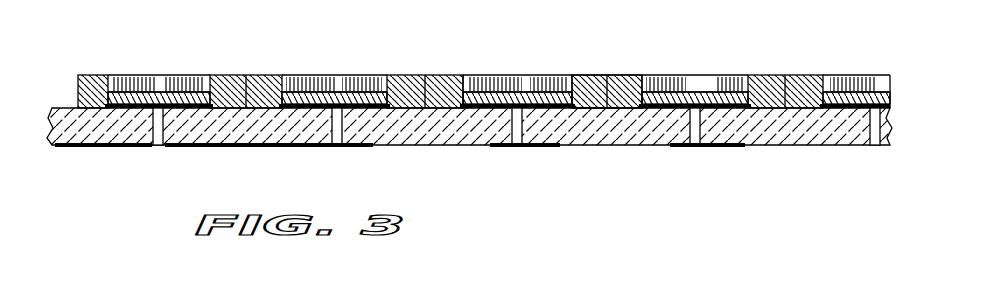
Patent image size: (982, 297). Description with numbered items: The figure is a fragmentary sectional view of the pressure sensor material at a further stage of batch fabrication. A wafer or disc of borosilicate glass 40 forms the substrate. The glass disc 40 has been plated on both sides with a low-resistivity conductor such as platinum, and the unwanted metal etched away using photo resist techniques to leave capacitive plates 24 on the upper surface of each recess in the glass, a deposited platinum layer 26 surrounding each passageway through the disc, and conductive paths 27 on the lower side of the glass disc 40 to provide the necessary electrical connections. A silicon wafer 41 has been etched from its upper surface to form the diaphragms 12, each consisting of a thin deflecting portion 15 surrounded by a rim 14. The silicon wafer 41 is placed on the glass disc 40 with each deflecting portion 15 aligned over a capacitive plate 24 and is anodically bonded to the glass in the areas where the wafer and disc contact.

The diaphragm 12 is at (276, 74).
The rim 14 is at (463, 100).
The deflecting portion 15 is at (498, 95).
The capacitive plate 24 is at (363, 110).
The deposited platinum layer 26 is at (336, 146).
The conductive path 27 is at (188, 147).
The glass disc 40 is at (660, 133).
The silicon wafer 41 is at (617, 82).